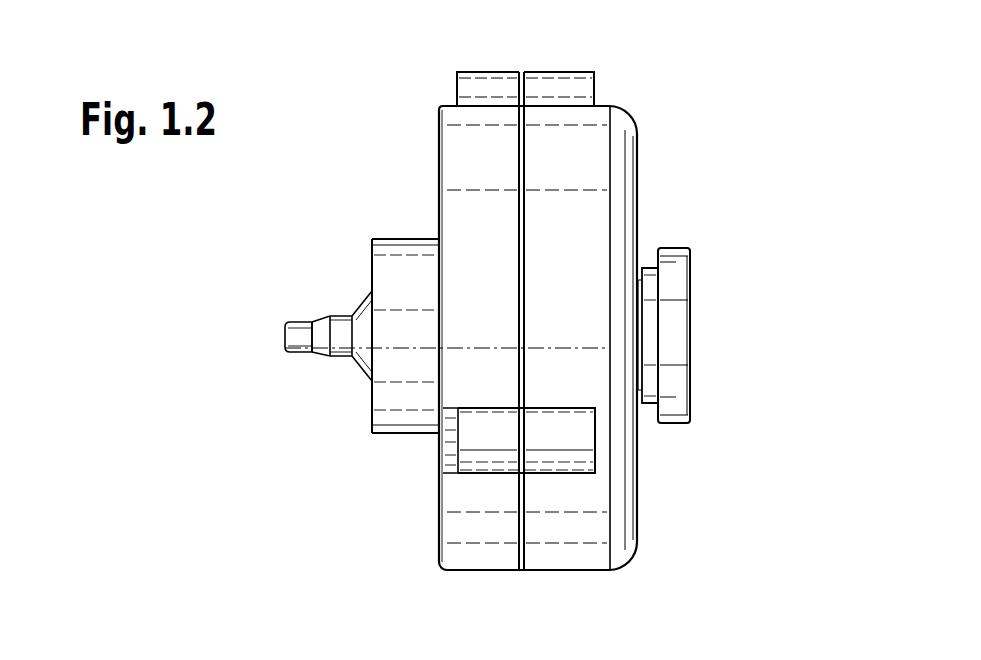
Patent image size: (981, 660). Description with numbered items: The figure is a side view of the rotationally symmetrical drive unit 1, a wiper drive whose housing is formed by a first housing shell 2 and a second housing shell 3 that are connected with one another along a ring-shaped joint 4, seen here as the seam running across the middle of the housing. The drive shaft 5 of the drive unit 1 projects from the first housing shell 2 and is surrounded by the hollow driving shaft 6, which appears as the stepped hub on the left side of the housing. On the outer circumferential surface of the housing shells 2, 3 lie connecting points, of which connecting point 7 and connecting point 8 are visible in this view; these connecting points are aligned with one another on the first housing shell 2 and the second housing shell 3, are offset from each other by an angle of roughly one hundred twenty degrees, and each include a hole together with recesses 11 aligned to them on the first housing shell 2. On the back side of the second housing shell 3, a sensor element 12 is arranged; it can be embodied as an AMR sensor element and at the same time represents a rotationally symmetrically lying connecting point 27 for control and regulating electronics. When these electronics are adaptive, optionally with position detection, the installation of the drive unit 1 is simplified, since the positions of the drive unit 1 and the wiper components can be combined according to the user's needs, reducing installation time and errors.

The rotationally symmetrical drive unit 1 is at (672, 102).
The first housing shell 2 is at (478, 550).
The second housing shell 3 is at (573, 550).
The ring-shaped joint 4 is at (522, 572).
The drive shaft 5 is at (300, 334).
The hollow driving shaft 6 is at (362, 320).
The connecting point 7 is at (566, 93).
The connecting point 8 is at (583, 455).
The recesses 11 is at (457, 90).
The sensor element 12 is at (678, 383).
The connecting point for control and regulating electronics 27 is at (698, 335).